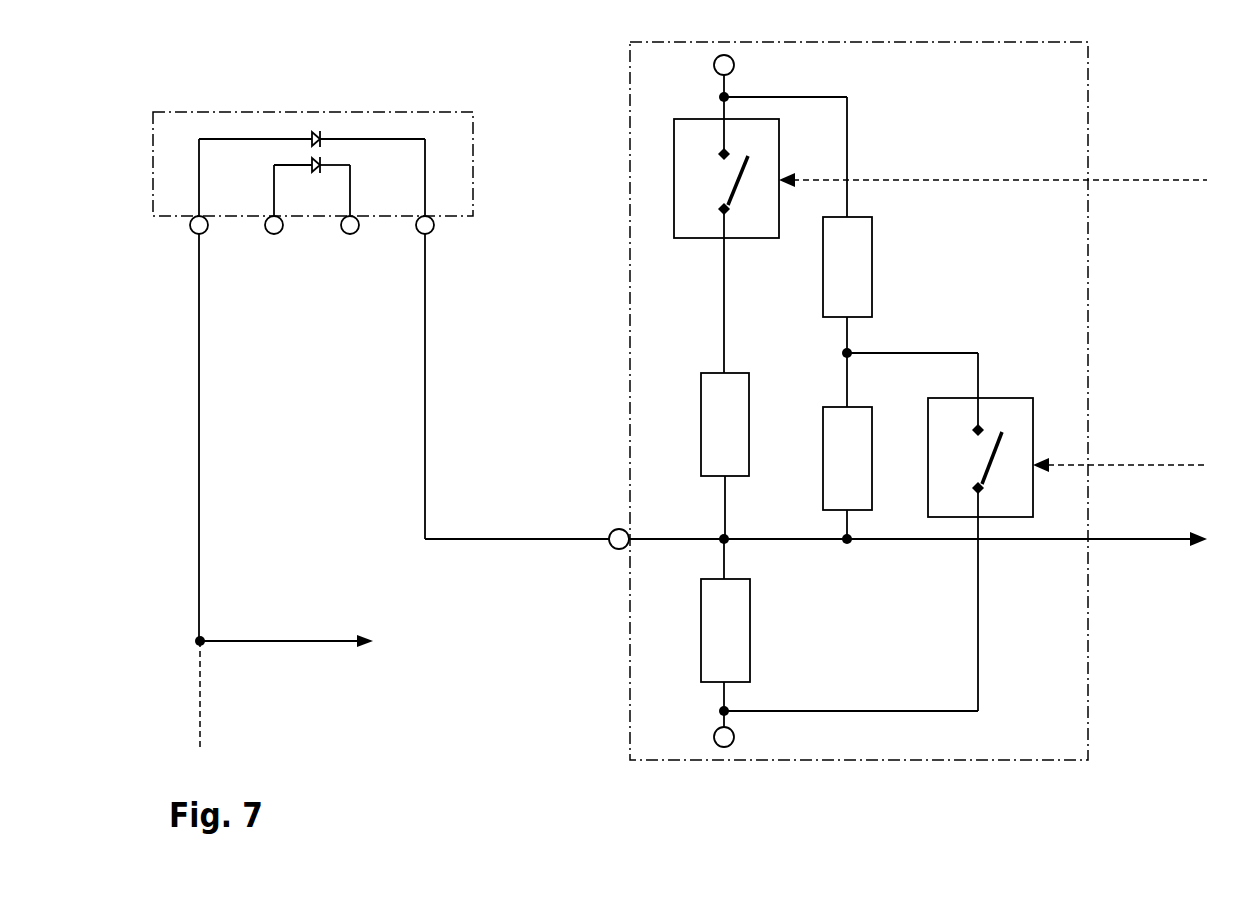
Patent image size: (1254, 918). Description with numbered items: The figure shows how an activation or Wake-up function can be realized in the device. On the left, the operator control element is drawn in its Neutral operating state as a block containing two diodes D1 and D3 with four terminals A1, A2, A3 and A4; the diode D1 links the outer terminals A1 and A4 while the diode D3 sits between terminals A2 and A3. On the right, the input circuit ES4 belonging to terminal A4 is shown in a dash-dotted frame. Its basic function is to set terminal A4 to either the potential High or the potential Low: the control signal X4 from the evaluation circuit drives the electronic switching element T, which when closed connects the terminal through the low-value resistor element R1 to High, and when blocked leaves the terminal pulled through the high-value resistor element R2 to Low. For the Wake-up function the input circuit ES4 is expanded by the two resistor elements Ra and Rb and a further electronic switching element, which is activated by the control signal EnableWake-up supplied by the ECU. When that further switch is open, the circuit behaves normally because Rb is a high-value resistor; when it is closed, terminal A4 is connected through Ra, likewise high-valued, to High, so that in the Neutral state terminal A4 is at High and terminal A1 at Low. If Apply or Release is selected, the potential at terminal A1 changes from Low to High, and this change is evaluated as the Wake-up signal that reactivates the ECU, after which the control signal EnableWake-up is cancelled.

The diode D1 is at (312, 130).
The diode D3 is at (312, 178).
The terminal A1 is at (179, 443).
The terminal A2 is at (254, 218).
The terminal A3 is at (332, 218).
The terminal A4 is at (791, 358).
The electronic switching element T is at (726, 235).
The low-value resistor element R1 is at (725, 458).
The high-value resistor element R2 is at (725, 627).
The resistor element Ra is at (798, 227).
The resistor element Rb is at (847, 448).
The input circuit ES4 is at (1073, 746).
The control signal X4 is at (993, 164).
The High potential High is at (761, 78).
The Low potential Low is at (759, 731).
The Neutral operating state Neutral is at (313, 141).
The Wake-up signal Wake-up is at (286, 628).
The Enable Wake-up control signal EnableWake-up is at (1120, 436).